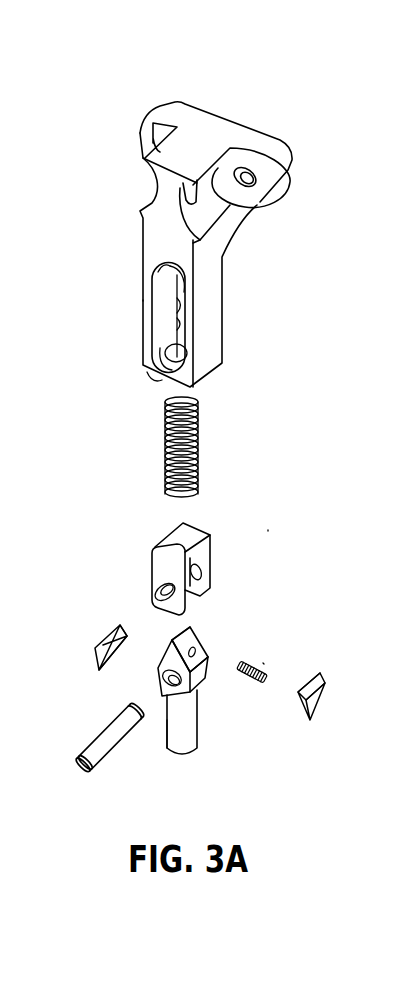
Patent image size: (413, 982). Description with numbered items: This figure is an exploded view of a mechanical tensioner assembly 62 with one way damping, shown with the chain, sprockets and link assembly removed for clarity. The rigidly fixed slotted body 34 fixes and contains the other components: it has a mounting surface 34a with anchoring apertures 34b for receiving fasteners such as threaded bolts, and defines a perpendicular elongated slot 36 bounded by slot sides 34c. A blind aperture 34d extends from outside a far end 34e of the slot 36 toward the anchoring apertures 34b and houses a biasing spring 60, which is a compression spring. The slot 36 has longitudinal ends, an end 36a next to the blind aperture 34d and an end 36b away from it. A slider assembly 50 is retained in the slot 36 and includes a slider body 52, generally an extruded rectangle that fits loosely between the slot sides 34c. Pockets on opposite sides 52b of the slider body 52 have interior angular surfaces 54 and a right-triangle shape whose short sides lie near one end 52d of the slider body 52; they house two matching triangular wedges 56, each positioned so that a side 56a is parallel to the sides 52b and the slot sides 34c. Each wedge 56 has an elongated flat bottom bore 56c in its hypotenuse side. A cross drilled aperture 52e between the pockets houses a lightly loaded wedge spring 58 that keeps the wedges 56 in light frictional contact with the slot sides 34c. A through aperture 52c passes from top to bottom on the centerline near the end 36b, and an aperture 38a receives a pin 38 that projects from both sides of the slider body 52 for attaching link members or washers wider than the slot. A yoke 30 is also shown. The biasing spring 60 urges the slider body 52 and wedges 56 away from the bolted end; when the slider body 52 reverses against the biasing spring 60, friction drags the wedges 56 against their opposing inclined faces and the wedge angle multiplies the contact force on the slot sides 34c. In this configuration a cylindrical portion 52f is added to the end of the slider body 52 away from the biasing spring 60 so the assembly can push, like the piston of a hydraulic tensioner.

The mechanical tensioner assembly 62 is at (108, 135).
The slotted body 34 is at (200, 148).
The mounting surface 34a is at (256, 125).
The anchoring apertures 34b is at (153, 122).
The slot sides 34c is at (163, 300).
The blind aperture 34d is at (165, 270).
The far end 34e is at (158, 378).
The slot 36 is at (160, 319).
The slot end next to blind aperture 36a is at (187, 292).
The slot end away from blind aperture 36b is at (163, 350).
The through aperture 52c is at (177, 353).
The biasing spring 60 is at (198, 410).
The slider assembly 50 is at (268, 528).
The yoke 30 is at (170, 535).
The slider body 52 is at (183, 697).
The sides of the slider body 52b is at (200, 683).
The end of the slider body 52d is at (187, 627).
The cross drilled aperture 52e is at (193, 650).
The cylindrical portion 52f is at (182, 745).
The aperture for pin 38a is at (162, 690).
The angular surfaces 54 is at (200, 658).
The wedge spring 58 is at (263, 663).
The wedges 56 is at (97, 658).
The side of wedge 56a is at (112, 630).
The elongated flat bottom bore 56c is at (127, 657).
The pin 38 is at (110, 738).